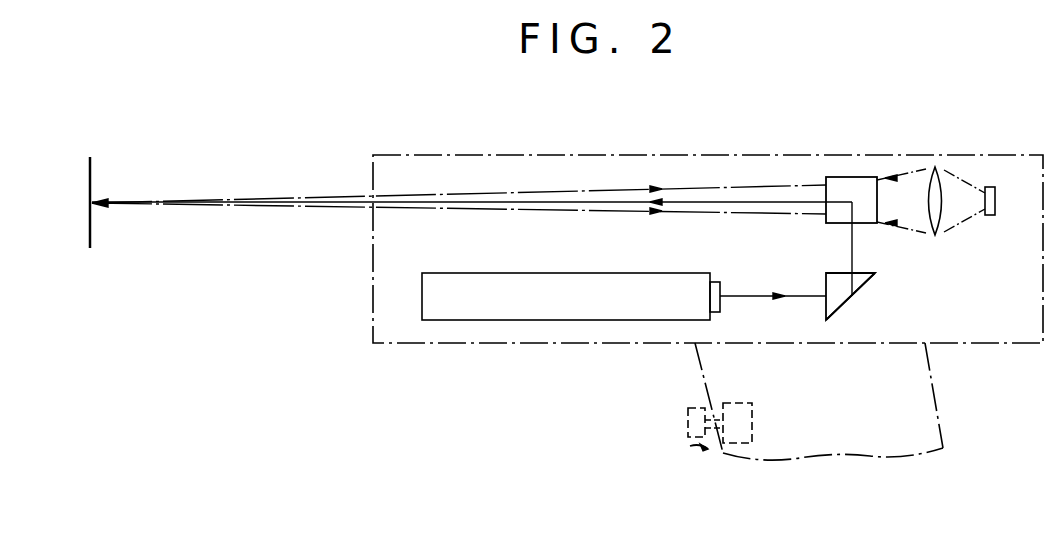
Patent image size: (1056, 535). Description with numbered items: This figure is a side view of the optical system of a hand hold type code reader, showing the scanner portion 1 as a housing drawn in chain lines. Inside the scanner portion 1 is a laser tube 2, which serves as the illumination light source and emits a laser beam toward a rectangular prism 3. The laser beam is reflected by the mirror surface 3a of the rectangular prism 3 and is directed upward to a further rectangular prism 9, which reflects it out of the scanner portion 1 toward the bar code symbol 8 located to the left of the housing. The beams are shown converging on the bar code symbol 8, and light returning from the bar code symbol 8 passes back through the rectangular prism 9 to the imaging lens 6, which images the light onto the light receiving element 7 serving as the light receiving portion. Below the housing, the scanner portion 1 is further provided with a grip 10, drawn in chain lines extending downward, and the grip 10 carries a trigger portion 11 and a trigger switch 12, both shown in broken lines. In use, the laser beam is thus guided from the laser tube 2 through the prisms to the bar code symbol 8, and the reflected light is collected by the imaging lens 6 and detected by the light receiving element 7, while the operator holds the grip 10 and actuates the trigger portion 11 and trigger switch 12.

The scanner portion 1 is at (800, 155).
The laser tube 2 is at (645, 273).
The rectangular prism 3 is at (860, 283).
The mirror surface 3a is at (840, 305).
The imaging lens 6 is at (940, 214).
The light receiving element 7 is at (996, 201).
The bar code symbol 8 is at (88, 225).
The rectangular prism 9 is at (865, 176).
The grip 10 is at (938, 411).
The trigger portion 11 is at (752, 427).
The trigger switch 12 is at (688, 418).